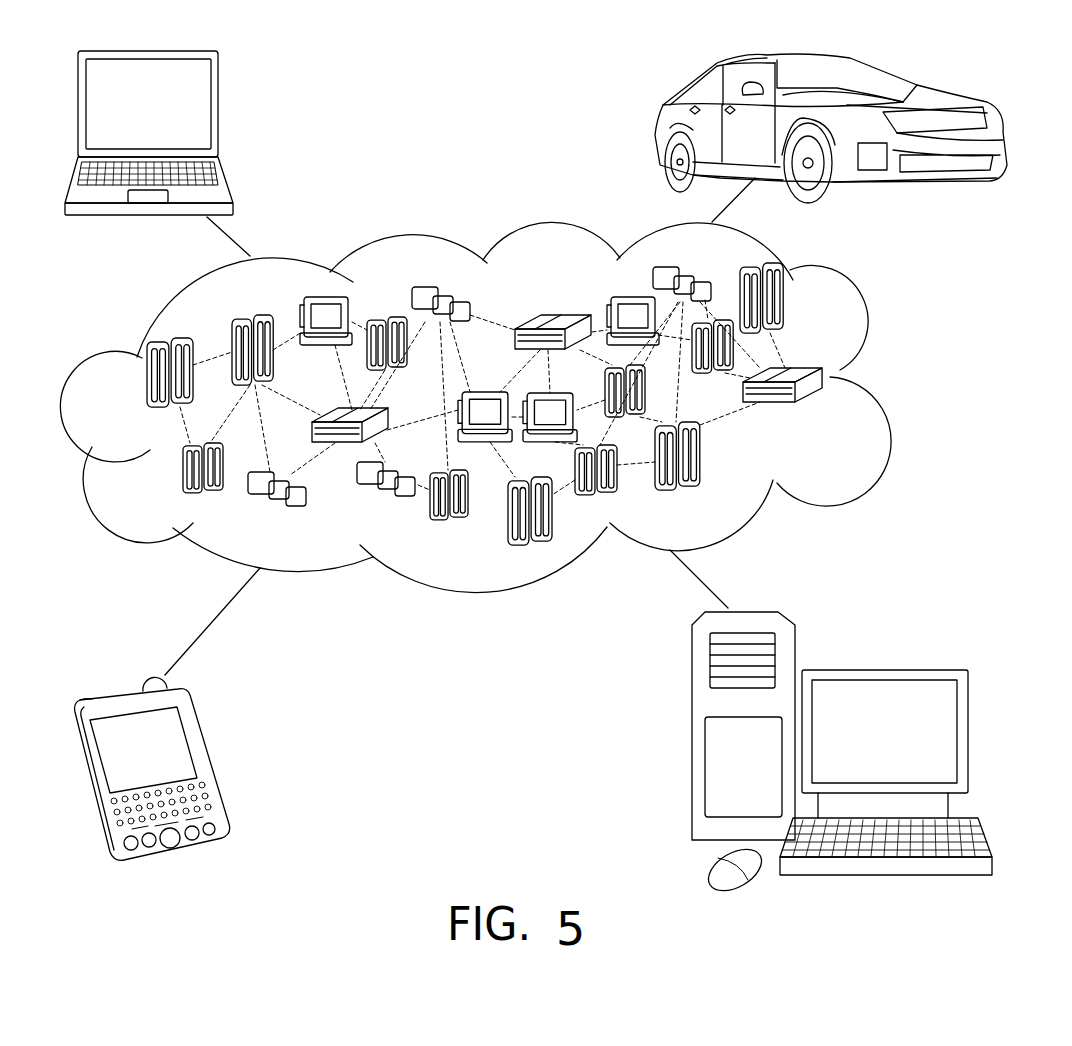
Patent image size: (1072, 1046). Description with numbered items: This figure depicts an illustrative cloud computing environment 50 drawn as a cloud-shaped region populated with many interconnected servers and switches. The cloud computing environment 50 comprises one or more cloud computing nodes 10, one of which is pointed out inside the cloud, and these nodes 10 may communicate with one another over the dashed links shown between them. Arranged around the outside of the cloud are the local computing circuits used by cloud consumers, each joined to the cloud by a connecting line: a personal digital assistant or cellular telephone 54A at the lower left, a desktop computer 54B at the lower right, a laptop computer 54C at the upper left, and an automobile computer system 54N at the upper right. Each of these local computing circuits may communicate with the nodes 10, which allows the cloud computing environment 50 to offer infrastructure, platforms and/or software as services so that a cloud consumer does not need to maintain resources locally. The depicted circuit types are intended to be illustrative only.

The laptop computer 54C is at (218, 116).
The automobile computer system 54N is at (660, 132).
The cloud computing environment 50 is at (499, 407).
The cloud computing node 10 is at (824, 413).
The personal digital assistant (PDA) or cellular telephone 54A is at (207, 763).
The desktop computer 54B is at (882, 668).